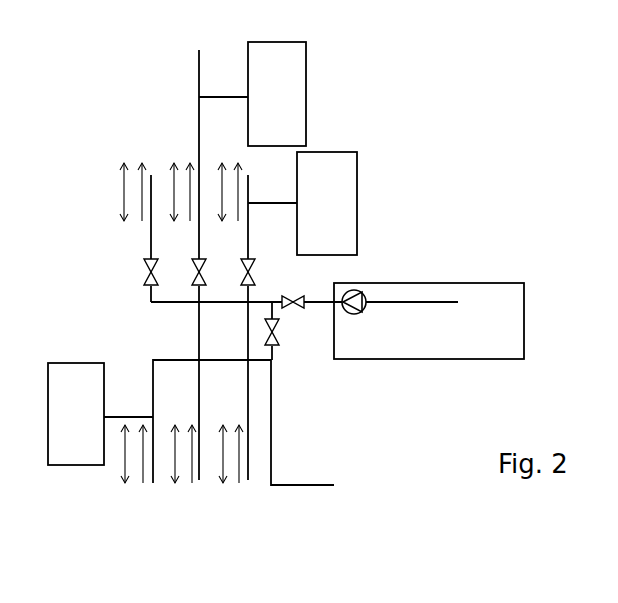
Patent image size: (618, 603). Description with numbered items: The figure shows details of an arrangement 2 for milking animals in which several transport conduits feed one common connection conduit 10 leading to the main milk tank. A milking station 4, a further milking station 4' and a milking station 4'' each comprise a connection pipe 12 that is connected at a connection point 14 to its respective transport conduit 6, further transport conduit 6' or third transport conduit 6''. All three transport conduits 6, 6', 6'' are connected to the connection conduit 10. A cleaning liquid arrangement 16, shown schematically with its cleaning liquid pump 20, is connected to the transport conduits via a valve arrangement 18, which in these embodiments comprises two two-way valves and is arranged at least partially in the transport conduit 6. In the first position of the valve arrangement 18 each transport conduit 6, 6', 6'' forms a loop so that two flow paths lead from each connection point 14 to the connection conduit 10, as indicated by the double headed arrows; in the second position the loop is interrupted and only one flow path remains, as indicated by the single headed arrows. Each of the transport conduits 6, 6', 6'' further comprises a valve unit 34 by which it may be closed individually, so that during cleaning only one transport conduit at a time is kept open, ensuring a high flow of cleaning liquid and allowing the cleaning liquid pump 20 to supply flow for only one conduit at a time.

The arrangement for milking animals 2 is at (92, 52).
The connection pipe 12 is at (222, 97).
The connection point 14 is at (200, 97).
The further milking station 4' is at (277, 94).
The milking station 4 is at (327, 203).
The milking station associated with third transport conduit 4'' is at (76, 414).
The cleaning liquid arrangement 16 is at (429, 321).
The cleaning liquid pump 20 is at (364, 307).
The valve arrangement 18 is at (294, 323).
The valve unit 34 is at (248, 283).
The connection conduit 10 is at (272, 475).
The third transport conduit 6'' is at (155, 365).
The further transport conduit 6' is at (200, 358).
The transport conduit 6 is at (229, 358).